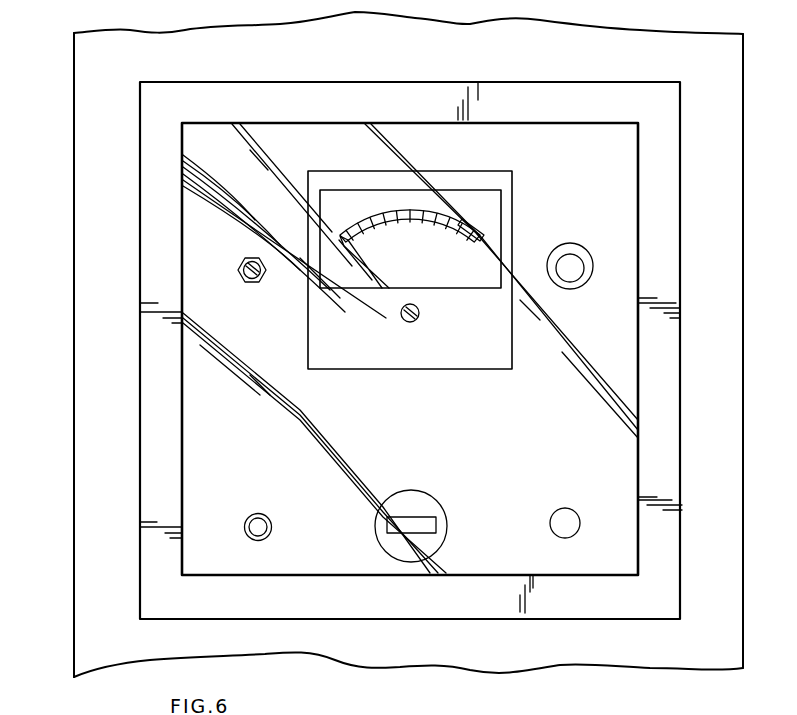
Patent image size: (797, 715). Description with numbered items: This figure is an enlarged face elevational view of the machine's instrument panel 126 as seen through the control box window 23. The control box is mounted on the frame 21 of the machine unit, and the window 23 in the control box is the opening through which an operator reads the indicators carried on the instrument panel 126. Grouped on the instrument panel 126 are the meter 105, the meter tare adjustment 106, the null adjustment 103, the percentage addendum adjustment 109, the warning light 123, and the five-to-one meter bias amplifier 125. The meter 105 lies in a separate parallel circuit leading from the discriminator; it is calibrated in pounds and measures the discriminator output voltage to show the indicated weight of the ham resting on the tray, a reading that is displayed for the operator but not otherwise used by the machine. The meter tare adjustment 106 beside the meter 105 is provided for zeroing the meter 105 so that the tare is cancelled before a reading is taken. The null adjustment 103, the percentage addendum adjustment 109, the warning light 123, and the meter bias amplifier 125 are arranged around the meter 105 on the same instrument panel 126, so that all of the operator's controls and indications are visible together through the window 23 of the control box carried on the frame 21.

The frame 21 is at (86, 624).
The window 23 is at (252, 495).
The null adjustment 103 is at (570, 272).
The meter 105 is at (437, 353).
The meter tare adjustment 106 is at (240, 270).
The percentage addendum adjustment 109 is at (434, 540).
The warning light 123 is at (252, 532).
The meter bias amplifier 125 is at (563, 533).
The instrument panel 126 is at (559, 428).